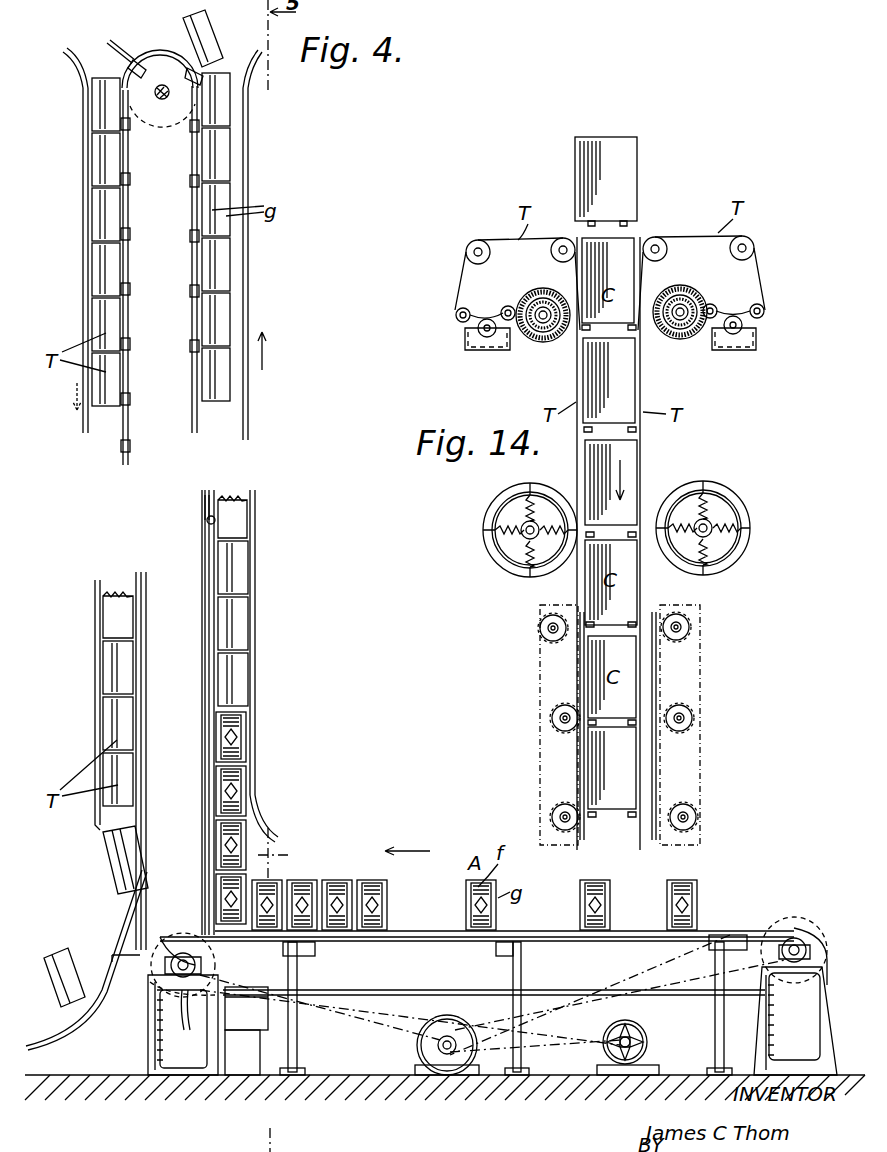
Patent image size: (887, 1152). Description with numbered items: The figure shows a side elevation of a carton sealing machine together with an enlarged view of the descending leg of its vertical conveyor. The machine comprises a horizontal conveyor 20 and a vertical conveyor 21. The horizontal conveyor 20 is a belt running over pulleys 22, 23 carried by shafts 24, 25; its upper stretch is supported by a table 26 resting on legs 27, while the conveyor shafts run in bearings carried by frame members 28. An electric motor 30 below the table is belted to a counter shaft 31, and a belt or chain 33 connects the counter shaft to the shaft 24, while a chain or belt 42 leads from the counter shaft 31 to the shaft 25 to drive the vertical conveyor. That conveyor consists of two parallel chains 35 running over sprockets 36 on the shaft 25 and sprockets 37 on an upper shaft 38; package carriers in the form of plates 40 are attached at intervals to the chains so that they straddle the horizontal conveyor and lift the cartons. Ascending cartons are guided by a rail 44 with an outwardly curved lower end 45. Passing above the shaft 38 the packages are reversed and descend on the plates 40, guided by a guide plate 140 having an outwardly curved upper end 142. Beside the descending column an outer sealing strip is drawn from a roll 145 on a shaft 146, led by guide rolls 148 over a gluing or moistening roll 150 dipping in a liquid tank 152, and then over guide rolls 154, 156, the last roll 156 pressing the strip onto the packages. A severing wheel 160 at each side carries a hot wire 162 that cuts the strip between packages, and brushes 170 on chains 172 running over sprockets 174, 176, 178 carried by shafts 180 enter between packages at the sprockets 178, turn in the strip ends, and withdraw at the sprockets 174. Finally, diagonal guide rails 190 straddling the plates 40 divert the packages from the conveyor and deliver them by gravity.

In FIG. 4, the outwardly curved upper end 142 is at (66, 60).
In FIG. 4, the guide plate 140 is at (86, 277).
In FIG. 4, the sprockets 37 is at (155, 52).
In FIG. 4, the upper shaft 38 is at (167, 100).
In FIG. 4, the vertical conveyor 21 is at (196, 276).
In FIG. 4, the plates 40 is at (102, 192).
In FIG. 14, the plates 40 is at (628, 223).
In FIG. 4, the chains 35 is at (206, 527).
In FIG. 4, the rail 44 is at (256, 680).
In FIG. 4, the outwardly curved lower end 45 is at (266, 808).
In FIG. 4, the diagonal supporting and guide rails 190 is at (112, 918).
In FIG. 4, the horizontal conveyor 20 is at (425, 926).
In FIG. 4, the table 26 is at (474, 935).
In FIG. 4, the legs 27 is at (298, 1050).
In FIG. 4, the pulley 23 is at (178, 967).
In FIG. 4, the shaft 25 is at (162, 997).
In FIG. 4, the frame members 28 is at (212, 1043).
In FIG. 4, the sprockets 36 is at (222, 1031).
In FIG. 4, the pulley 22 is at (796, 935).
In FIG. 4, the shaft 24 is at (792, 945).
In FIG. 4, the counter shaft 31 is at (445, 1048).
In FIG. 4, the electric motor 30 is at (648, 1040).
In FIG. 4, the chain or belt 42 is at (328, 985).
In FIG. 4, the belt or chain 33 is at (655, 966).
In FIG. 14, the guide roll 156 is at (660, 242).
In FIG. 14, the guide roll 154 is at (752, 246).
In FIG. 14, the guide rolls 148 is at (508, 306).
In FIG. 14, the gluing or moistening roll 150 is at (480, 333).
In FIG. 14, the liquid tank 152 is at (758, 342).
In FIG. 14, the roll 145 is at (548, 337).
In FIG. 14, the shaft 146 is at (541, 320).
In FIG. 14, the severing wheel 160 is at (505, 566).
In FIG. 14, the hot wire 162 is at (488, 535).
In FIG. 14, the chains 172 is at (665, 674).
In FIG. 14, the brushes 170 is at (682, 614).
In FIG. 14, the sprockets 178 is at (690, 626).
In FIG. 14, the shafts 180 is at (684, 632).
In FIG. 14, the sprockets 176 is at (690, 720).
In FIG. 14, the sprockets 174 is at (556, 820).